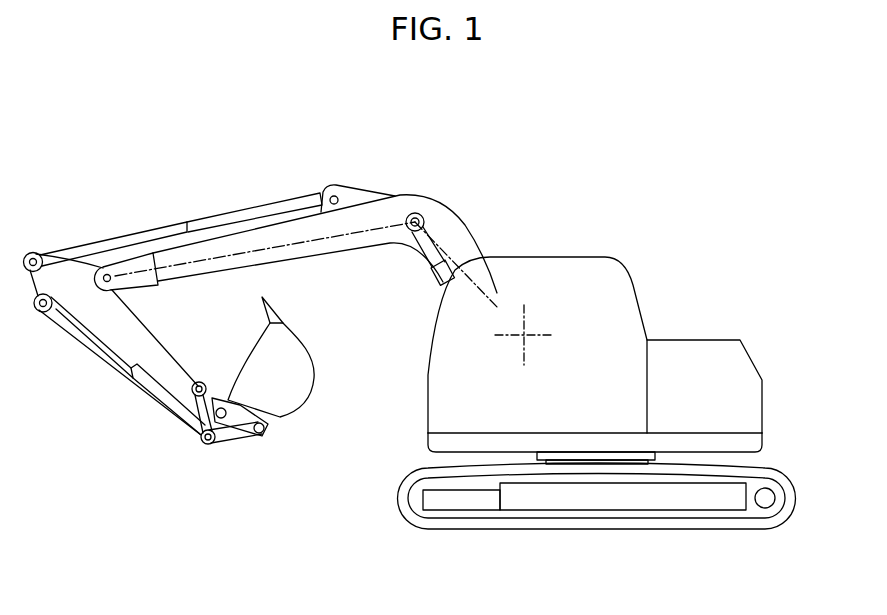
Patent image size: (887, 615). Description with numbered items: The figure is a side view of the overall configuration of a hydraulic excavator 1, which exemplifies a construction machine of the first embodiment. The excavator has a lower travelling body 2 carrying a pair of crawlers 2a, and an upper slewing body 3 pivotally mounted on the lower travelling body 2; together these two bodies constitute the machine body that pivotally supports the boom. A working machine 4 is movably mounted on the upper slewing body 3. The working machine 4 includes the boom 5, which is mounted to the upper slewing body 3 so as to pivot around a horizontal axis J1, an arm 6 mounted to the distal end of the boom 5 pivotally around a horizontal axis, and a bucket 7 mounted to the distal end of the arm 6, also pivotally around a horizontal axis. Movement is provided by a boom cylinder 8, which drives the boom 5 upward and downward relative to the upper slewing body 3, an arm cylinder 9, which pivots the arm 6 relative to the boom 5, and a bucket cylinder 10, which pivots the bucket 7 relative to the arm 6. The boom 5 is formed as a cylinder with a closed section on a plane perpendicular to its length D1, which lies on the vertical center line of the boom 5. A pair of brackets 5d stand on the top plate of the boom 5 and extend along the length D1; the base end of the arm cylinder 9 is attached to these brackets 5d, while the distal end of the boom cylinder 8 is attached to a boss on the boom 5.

The hydraulic excavator 1 is at (707, 112).
The lower travelling body 2 is at (800, 517).
The crawlers 2a is at (765, 470).
The upper slewing body 3 is at (778, 318).
The working machine 4 is at (170, 138).
The boom 5 is at (452, 206).
The brackets 5d is at (350, 178).
The arm 6 is at (172, 340).
The bucket 7 is at (302, 340).
The boom cylinder 8 is at (437, 282).
The arm cylinder 9 is at (255, 207).
The bucket cylinder 10 is at (100, 366).
The length of the boom D1 is at (487, 290).
The horizontal axis J1 is at (526, 333).